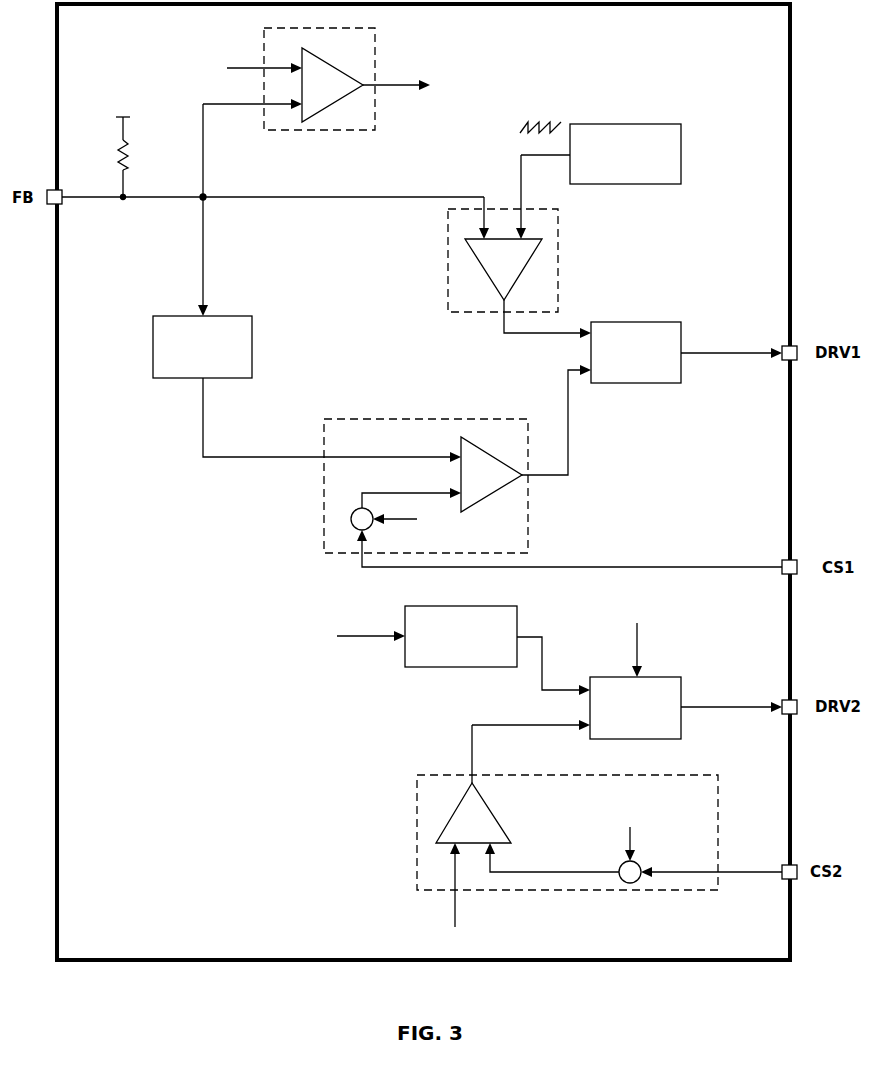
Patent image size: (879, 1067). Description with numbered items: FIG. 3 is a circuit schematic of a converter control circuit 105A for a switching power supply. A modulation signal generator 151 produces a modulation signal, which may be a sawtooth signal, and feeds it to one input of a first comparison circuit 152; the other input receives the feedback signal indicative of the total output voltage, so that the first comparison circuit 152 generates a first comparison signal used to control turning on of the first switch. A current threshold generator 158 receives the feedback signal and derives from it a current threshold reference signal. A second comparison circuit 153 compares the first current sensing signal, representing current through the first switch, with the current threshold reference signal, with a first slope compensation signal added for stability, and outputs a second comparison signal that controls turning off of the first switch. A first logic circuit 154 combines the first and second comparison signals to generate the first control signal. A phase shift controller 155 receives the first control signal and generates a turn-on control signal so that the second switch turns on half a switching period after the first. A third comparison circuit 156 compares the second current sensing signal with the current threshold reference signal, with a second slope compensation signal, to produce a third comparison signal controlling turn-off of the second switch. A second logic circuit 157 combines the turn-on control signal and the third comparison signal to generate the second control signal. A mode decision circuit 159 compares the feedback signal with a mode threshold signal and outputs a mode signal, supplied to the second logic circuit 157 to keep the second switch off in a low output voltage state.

The converter control circuit 105A is at (103, 951).
The modulation signal generator 151 is at (602, 185).
The first comparison circuit 152 is at (490, 313).
The second comparison circuit 153 is at (341, 553).
The first logic circuit 154 is at (622, 384).
The phase shift controller 155 is at (428, 668).
The third comparison circuit 156 is at (435, 890).
The second logic circuit 157 is at (613, 740).
The current threshold generator 158 is at (170, 378).
The mode decision circuit 159 is at (284, 131).